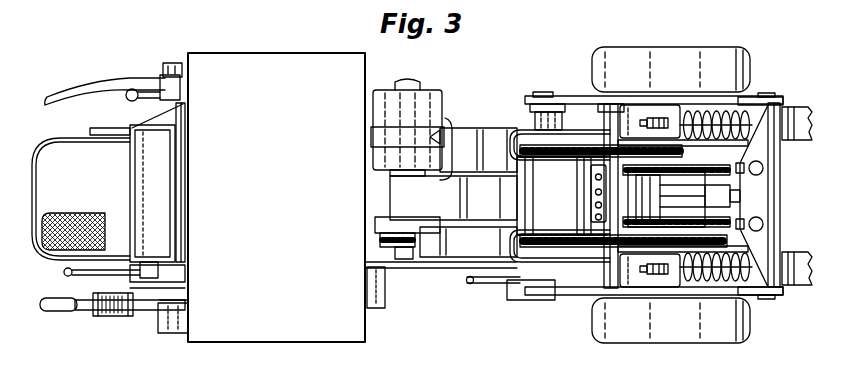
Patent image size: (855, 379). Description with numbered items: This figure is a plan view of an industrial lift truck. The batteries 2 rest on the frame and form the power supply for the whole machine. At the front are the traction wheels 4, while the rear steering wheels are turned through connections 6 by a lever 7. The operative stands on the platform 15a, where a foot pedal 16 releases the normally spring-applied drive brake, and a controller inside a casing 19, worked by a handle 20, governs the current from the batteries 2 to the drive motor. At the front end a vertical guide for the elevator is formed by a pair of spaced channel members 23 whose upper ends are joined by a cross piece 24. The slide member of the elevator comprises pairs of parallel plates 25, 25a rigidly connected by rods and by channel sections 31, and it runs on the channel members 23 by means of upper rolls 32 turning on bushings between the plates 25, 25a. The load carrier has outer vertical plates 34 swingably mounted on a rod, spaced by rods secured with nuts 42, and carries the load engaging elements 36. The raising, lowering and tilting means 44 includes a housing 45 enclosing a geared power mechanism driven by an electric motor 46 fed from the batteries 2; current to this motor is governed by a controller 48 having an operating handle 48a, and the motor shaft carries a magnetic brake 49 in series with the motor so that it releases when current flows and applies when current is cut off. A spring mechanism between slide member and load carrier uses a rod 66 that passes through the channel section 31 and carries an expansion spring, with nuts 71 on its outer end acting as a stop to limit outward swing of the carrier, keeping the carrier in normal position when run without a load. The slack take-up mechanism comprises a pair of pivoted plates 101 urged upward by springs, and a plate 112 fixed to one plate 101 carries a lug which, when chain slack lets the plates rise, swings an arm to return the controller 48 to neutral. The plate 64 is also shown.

The batteries 2 is at (276, 197).
The traction wheels 4 is at (727, 49).
The connections 6 is at (490, 284).
The lever 7 is at (73, 96).
The operative's platform 15a is at (81, 199).
The foot pedal 16 is at (87, 214).
The casing 19 is at (157, 182).
The handle 20 is at (113, 313).
The channel members 23 is at (604, 108).
The cross piece 24 is at (619, 108).
The plates 25 is at (578, 89).
The plates 25a is at (555, 145).
The channel section 31 is at (640, 106).
The upper rolls 32 is at (535, 118).
The outer vertical plates 34 is at (755, 99).
The load engaging elements 36 is at (799, 110).
The nuts 42 is at (775, 96).
The raising and lowering means 44 is at (453, 169).
The housing 45 is at (441, 247).
The electric motor 46 is at (373, 103).
The controller 48 is at (385, 296).
The operating handle 48a is at (66, 275).
The magnetic brake 49 is at (373, 223).
The plate 64 is at (777, 176).
The rod 66 is at (647, 123).
The nuts 71 is at (660, 285).
The plates 101 is at (551, 163).
The plate 112 is at (604, 243).